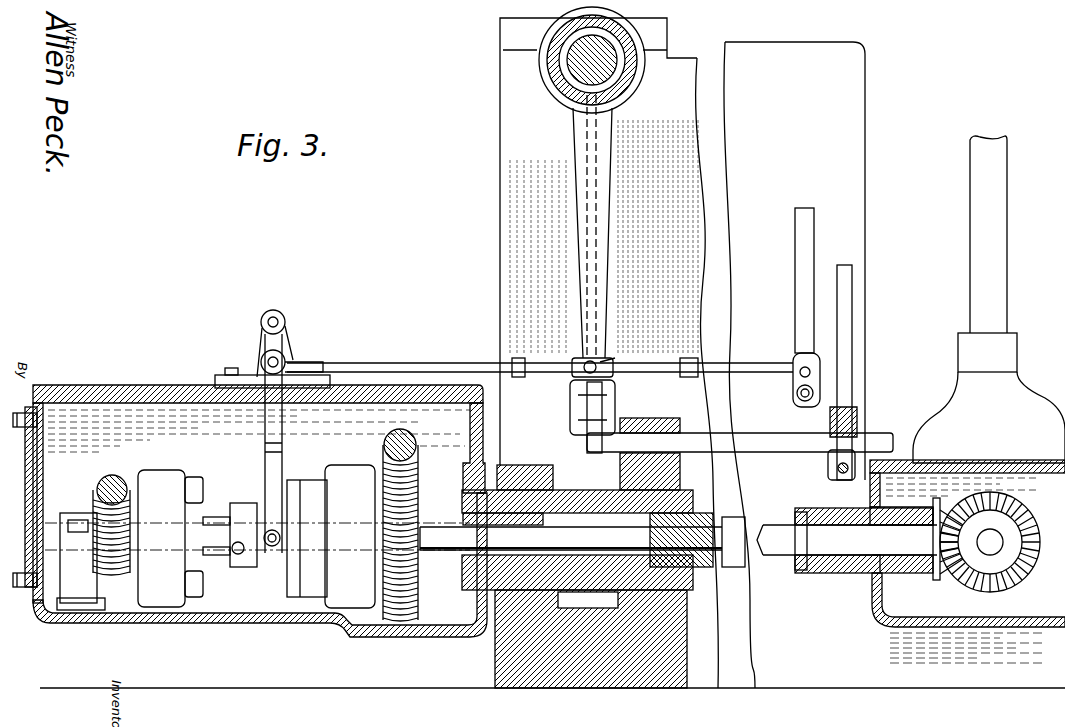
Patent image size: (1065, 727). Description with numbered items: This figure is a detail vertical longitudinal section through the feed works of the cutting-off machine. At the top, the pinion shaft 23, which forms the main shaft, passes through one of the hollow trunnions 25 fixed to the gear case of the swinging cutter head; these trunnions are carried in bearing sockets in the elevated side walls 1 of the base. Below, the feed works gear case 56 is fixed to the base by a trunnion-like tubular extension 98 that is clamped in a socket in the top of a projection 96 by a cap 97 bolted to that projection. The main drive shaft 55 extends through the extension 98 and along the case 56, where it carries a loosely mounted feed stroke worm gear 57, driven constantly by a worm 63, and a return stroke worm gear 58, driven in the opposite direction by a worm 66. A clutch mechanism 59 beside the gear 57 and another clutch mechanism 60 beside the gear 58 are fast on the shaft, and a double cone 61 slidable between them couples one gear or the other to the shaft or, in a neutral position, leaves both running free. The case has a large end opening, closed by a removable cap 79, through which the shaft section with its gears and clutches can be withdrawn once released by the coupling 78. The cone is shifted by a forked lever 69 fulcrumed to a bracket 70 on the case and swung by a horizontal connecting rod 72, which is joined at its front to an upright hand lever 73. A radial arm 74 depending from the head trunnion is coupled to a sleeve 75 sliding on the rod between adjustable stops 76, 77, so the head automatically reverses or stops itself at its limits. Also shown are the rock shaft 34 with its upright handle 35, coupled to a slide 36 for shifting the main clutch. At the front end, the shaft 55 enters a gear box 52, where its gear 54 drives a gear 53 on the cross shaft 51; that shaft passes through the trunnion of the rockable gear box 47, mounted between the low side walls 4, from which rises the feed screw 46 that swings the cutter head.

The side walls 1 is at (500, 180).
The pinion shaft 23 is at (597, 62).
The trunnions 25 is at (622, 92).
The radial arm 74 is at (580, 225).
The connecting rod 72 is at (408, 364).
The stop 76 is at (524, 352).
The sleeve 75 is at (612, 362).
The stop 77 is at (690, 354).
The bracket 70 is at (292, 338).
The forked lever 69 is at (263, 436).
The feed works gear case 56 is at (285, 626).
The removable cap 79 is at (33, 456).
The worm 66 is at (113, 475).
The worm gear 58 is at (108, 568).
The clutch mechanism 60 is at (180, 462).
The double cone 61 is at (290, 575).
The clutch mechanism 59 is at (341, 523).
The worm 63 is at (417, 448).
The worm gear 57 is at (422, 585).
The main drive shaft 55 is at (840, 582).
The cap 97 is at (512, 472).
The tubular extension 98 is at (590, 482).
The projection 96 is at (493, 632).
The coupling 78 is at (748, 565).
The slide 36 is at (612, 397).
The rock shaft 34 is at (790, 453).
The hand lever 73 is at (797, 250).
The handle 35 is at (852, 380).
The feed screw 46 is at (1011, 234).
The rockable gear box 47 is at (989, 398).
The gear box 52 is at (1003, 628).
The low vertical side walls 4 is at (967, 648).
The gear 53 is at (1033, 565).
The cross shaft 51 is at (993, 556).
The gear 54 is at (937, 581).